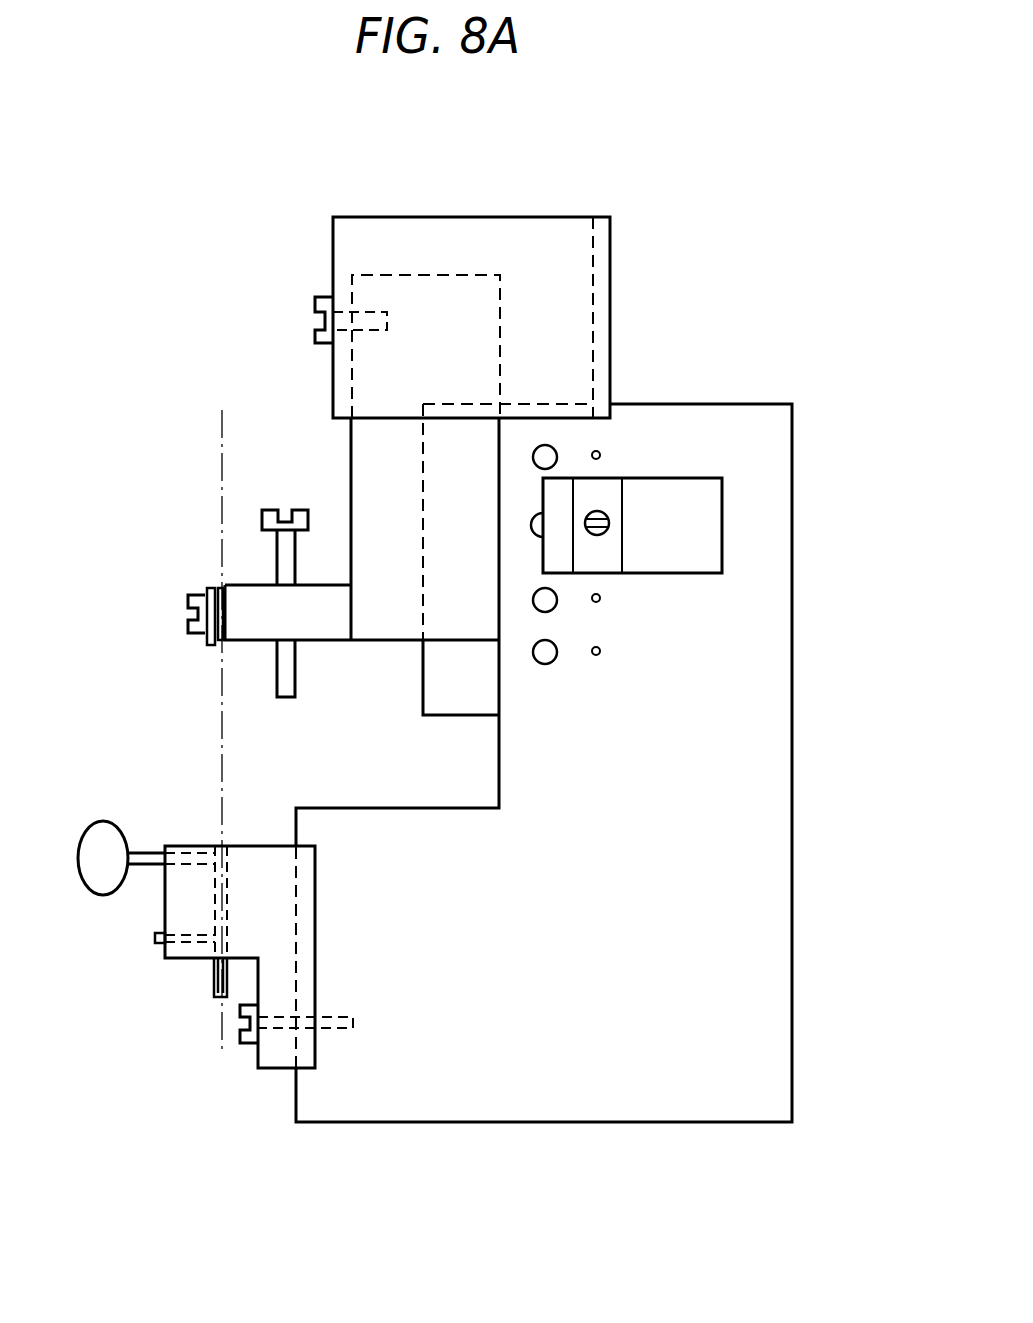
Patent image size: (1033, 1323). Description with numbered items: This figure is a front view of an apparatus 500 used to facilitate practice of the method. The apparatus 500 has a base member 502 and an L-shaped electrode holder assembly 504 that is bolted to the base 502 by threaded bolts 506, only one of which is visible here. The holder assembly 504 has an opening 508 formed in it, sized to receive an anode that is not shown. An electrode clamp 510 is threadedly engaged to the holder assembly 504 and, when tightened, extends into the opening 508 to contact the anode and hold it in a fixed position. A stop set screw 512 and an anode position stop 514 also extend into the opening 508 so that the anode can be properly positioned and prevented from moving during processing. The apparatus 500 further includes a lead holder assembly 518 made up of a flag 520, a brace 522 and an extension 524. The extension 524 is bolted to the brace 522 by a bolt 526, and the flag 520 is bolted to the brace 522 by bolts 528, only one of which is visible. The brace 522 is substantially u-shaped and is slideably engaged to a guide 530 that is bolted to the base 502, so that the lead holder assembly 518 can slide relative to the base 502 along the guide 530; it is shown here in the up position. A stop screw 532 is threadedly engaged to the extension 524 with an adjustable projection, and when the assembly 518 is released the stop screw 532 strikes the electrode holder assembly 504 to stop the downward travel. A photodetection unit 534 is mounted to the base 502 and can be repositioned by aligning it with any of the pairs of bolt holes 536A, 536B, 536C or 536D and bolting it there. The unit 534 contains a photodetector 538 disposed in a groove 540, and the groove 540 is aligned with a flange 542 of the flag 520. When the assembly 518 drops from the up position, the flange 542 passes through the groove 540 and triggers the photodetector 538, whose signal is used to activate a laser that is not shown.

The apparatus 500 is at (745, 184).
The base member 502 is at (792, 1075).
The L-shaped electrode holder assembly 504 is at (158, 970).
The threaded bolt 506 is at (240, 1040).
The opening 508 is at (228, 882).
The electrode clamp 510 is at (100, 820).
The stop set screw 512 is at (155, 938).
The anode position stop 514 is at (214, 977).
The lead holder assembly 518 is at (196, 648).
The flag 520 is at (486, 217).
The brace 522 is at (283, 515).
The extension 524 is at (322, 643).
The bolt 526 is at (200, 592).
The bolt 528 is at (315, 300).
The guide 530 is at (445, 718).
The stop screw 532 is at (276, 688).
The photodetection unit 534 is at (722, 555).
The bolt hole 536A is at (600, 654).
The bolt hole 536B is at (600, 601).
The bolt hole 536C is at (531, 524).
The bolt hole 536D is at (600, 452).
The photodetector 538 is at (609, 521).
The groove 540 is at (625, 490).
The flange 542 is at (594, 272).